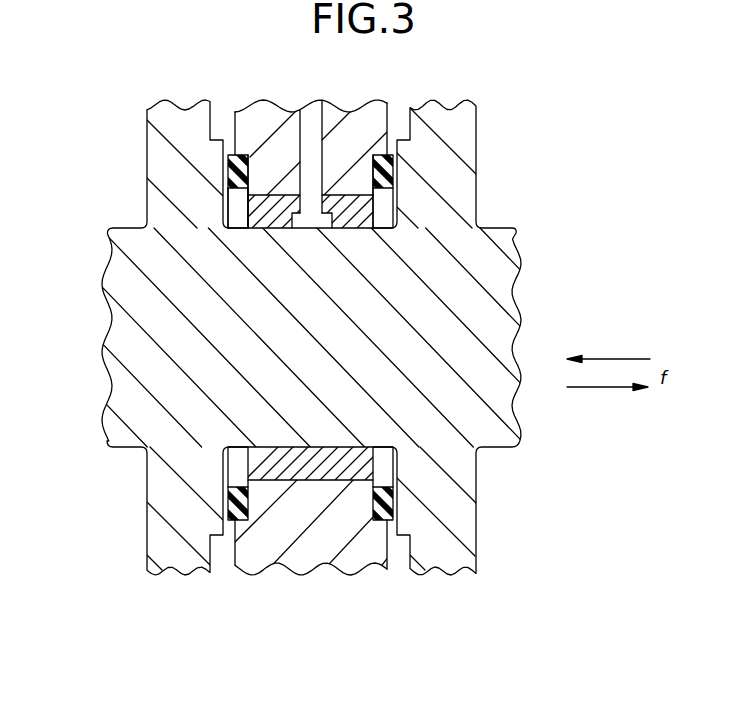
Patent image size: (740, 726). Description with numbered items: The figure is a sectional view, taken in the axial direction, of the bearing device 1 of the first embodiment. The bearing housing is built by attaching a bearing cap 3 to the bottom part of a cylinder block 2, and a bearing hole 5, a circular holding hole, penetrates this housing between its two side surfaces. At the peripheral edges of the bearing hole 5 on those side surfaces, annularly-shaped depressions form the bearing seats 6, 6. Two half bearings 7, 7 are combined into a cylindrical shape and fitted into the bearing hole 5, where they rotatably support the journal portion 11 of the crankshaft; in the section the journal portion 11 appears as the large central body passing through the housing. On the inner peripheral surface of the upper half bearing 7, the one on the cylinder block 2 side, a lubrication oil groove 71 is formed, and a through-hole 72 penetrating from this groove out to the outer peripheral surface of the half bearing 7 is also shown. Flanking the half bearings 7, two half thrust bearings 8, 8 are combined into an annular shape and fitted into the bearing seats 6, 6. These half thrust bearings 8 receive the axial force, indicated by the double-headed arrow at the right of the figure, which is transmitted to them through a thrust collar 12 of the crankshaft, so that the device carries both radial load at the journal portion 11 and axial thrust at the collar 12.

The bearing device 1 is at (315, 318).
The cylinder block 2 is at (267, 115).
The bearing cap 3 is at (297, 565).
The bearing hole 5 is at (336, 181).
The bearing seat 6 is at (394, 168).
The half bearing 7 is at (375, 207).
The half thrust bearing 8 is at (238, 195).
The journal portion 11 is at (257, 373).
The thrust collar 12 is at (221, 137).
The lubrication oil groove 71 is at (310, 218).
The through-hole 72 is at (310, 213).